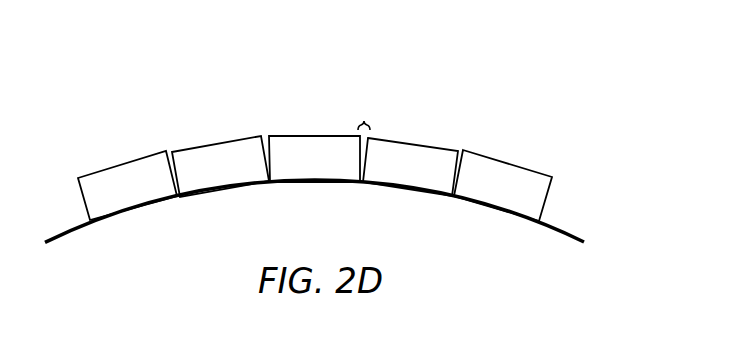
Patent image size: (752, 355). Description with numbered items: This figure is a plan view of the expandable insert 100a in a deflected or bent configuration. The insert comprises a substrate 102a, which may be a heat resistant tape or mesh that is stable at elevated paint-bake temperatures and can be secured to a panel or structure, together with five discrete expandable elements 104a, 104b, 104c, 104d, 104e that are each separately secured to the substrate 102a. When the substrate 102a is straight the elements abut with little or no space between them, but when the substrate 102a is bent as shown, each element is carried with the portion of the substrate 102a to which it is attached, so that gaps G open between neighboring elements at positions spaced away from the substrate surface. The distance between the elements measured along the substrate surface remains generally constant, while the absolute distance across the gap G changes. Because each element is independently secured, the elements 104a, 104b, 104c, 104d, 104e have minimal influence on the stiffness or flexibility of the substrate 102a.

The expandable insert 100a is at (264, 113).
The substrate 102a is at (561, 234).
The expandable element 104a is at (118, 175).
The expandable element 104b is at (208, 158).
The expandable element 104c is at (312, 145).
The expandable element 104d is at (437, 155).
The expandable element 104e is at (532, 183).
The gap G is at (365, 112).